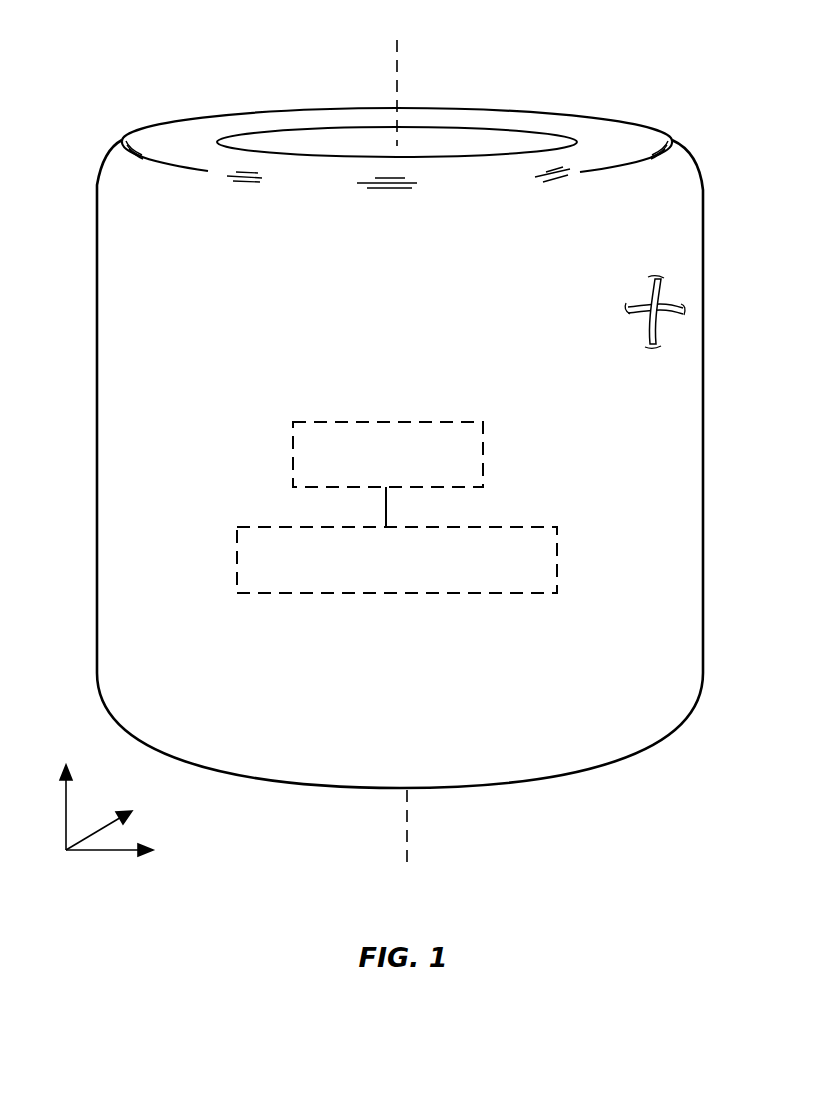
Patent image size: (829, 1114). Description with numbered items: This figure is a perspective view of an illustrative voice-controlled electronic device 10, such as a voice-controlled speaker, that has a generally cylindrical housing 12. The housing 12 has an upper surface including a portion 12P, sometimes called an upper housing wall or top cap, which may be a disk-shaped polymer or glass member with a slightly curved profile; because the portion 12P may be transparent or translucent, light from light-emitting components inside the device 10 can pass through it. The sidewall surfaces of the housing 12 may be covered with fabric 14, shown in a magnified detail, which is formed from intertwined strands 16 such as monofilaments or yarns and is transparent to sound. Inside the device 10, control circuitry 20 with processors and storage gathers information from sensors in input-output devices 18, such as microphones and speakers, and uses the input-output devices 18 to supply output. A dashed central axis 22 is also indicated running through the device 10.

The electronic device 10 is at (686, 70).
The housing 12 is at (703, 452).
The portion of housing 12P is at (527, 142).
The fabric 14 is at (642, 288).
The strands 16 is at (650, 329).
The input-output devices 18 is at (483, 443).
The control circuitry 20 is at (557, 553).
The longitudinal axis 22 is at (398, 63).